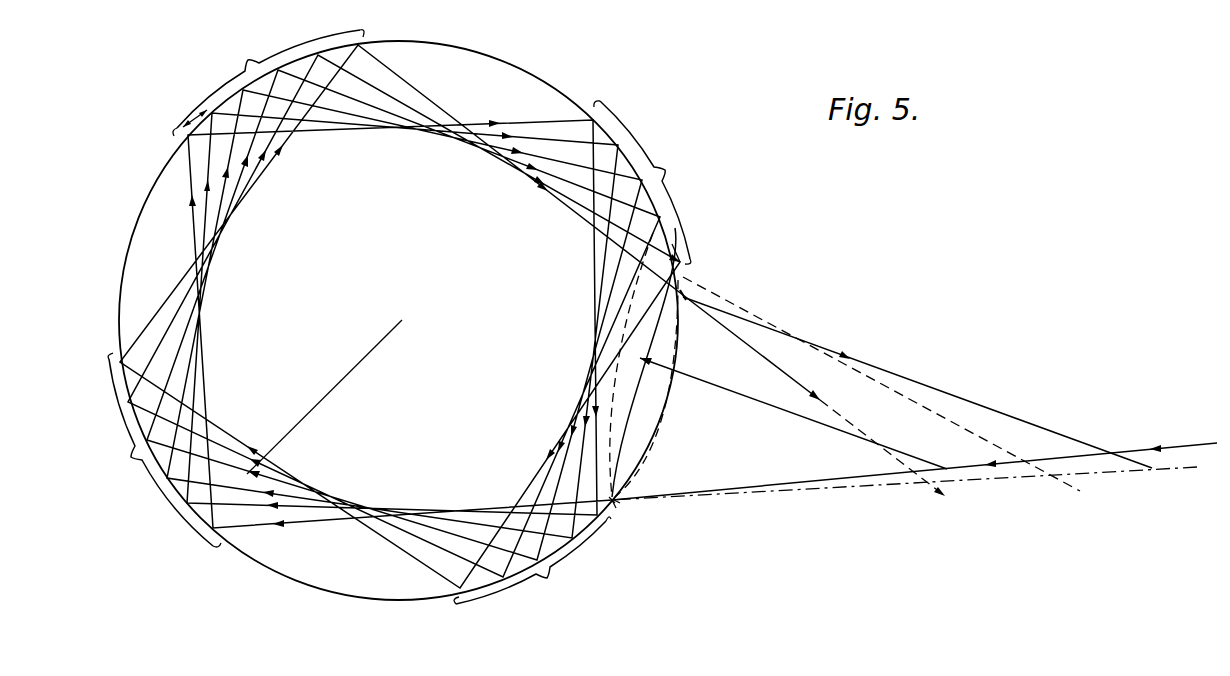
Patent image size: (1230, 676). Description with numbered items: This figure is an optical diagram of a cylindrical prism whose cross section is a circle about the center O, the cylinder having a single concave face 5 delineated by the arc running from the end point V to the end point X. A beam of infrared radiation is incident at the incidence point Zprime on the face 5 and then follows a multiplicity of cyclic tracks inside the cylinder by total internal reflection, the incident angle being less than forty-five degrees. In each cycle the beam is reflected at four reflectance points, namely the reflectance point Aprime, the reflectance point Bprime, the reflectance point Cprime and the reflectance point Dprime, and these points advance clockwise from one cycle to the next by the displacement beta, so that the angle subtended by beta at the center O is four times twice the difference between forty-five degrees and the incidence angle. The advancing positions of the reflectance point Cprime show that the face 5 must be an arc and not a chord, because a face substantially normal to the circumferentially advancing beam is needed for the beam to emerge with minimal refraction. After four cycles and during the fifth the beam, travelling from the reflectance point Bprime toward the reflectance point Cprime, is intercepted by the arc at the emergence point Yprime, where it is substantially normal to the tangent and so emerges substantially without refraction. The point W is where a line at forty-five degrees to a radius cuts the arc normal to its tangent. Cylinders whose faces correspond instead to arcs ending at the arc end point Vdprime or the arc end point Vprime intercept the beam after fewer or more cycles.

The concave face 5 is at (622, 412).
The reflectance point A' Aprime is at (159, 450).
The reflectance point B' Bprime is at (268, 83).
The reflectance point C' Cprime is at (644, 182).
The reflectance point D' Dprime is at (532, 560).
The center O is at (331, 391).
The end point V of arc VX V is at (688, 288).
The arc end point V' Vprime is at (672, 230).
The arc end point V'' Vdprime is at (674, 326).
The end point X of arc VX X is at (615, 510).
The point W is at (631, 519).
The emergence point Y' Yprime is at (646, 292).
The incidence point Z' Zprime is at (618, 502).
The displacement beta is at (188, 106).